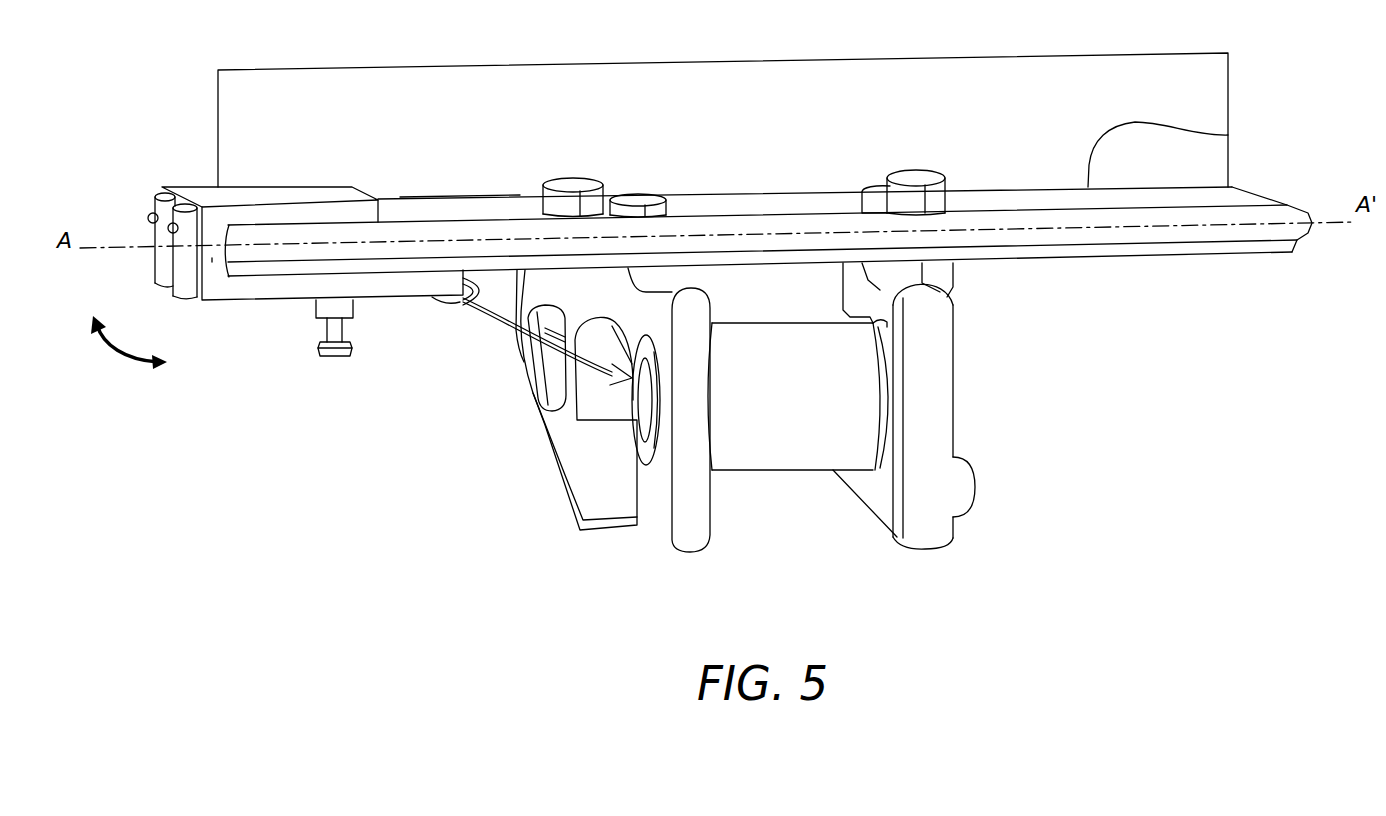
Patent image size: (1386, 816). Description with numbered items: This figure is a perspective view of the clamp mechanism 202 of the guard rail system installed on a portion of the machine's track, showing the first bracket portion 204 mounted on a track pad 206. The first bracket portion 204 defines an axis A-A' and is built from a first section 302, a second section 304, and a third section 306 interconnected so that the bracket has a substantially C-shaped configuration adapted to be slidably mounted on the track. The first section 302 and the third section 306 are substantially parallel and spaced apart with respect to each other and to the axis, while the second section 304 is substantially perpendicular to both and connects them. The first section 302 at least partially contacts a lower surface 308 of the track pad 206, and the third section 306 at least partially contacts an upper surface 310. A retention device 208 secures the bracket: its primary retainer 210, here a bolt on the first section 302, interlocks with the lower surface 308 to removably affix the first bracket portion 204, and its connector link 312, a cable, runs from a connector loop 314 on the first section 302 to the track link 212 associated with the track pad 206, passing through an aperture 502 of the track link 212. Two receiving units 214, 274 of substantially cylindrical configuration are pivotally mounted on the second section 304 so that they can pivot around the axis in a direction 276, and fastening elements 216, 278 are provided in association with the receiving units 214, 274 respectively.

The clamp mechanism 202 is at (197, 158).
The first bracket portion 204 is at (331, 166).
The track pad 206 is at (1228, 135).
The retention device 208 is at (341, 380).
The primary retainer 210 is at (327, 331).
The track link 212 is at (797, 407).
The receiving unit 214 is at (185, 291).
The fastening element 216 is at (168, 230).
The receiving unit 274 is at (154, 268).
The direction 276 is at (112, 360).
The fastening element 278 is at (148, 216).
The first section 302 is at (280, 289).
The second section 304 is at (213, 260).
The third section 306 is at (287, 217).
The lower surface 308 is at (497, 288).
The upper surface 310 is at (461, 198).
The connector link 312 is at (536, 396).
The connector loop 314 is at (437, 300).
The aperture 502 is at (530, 397).